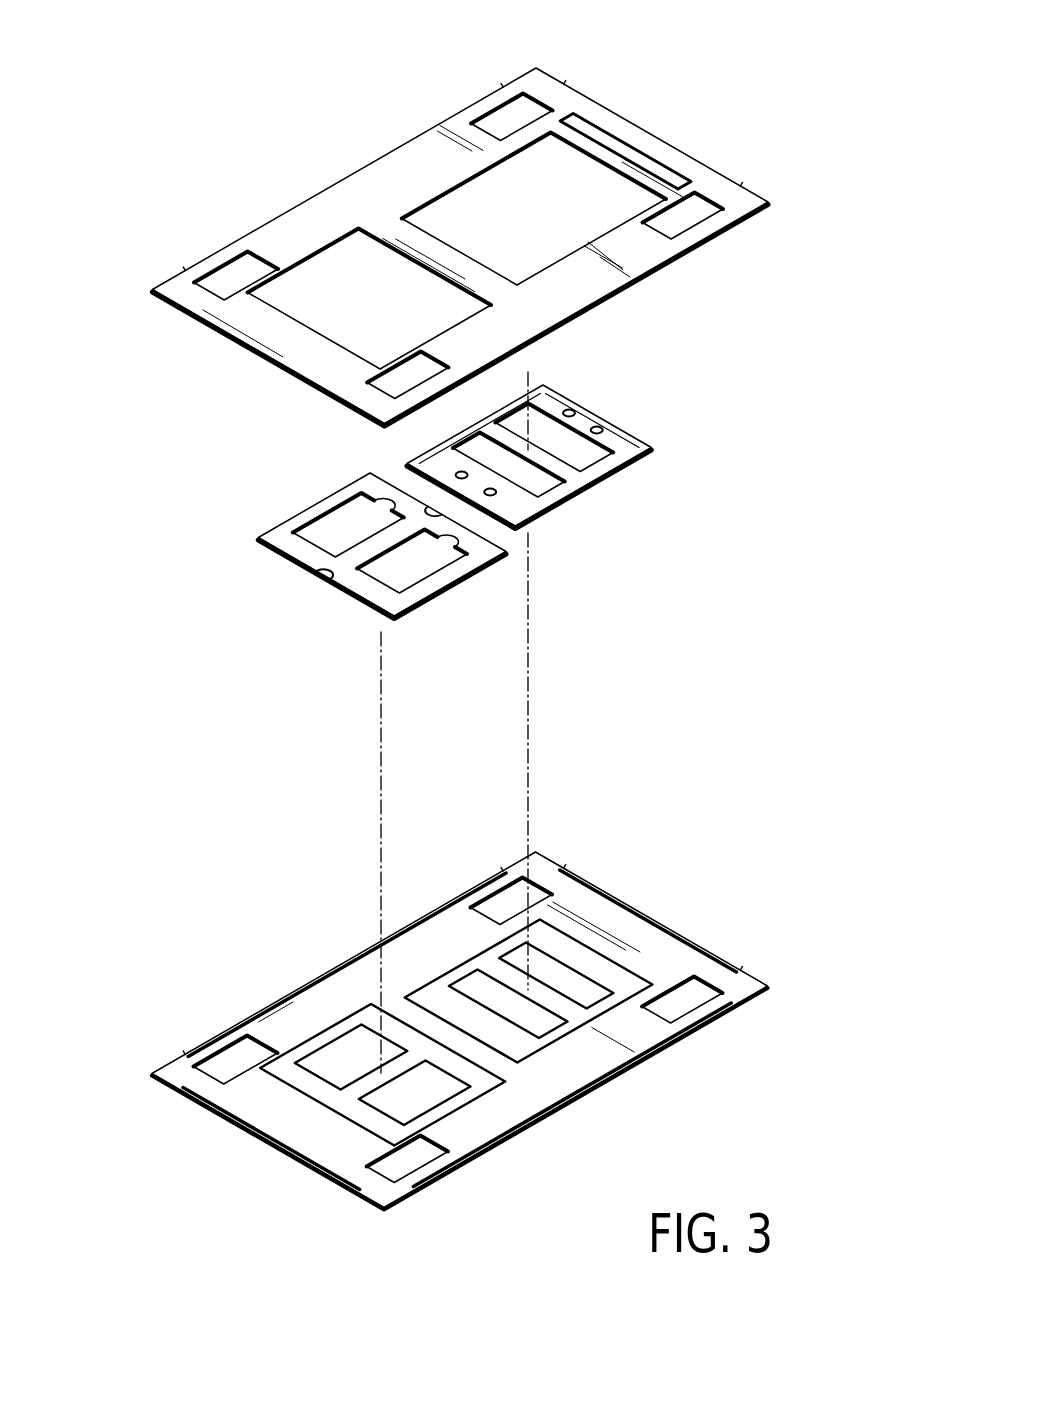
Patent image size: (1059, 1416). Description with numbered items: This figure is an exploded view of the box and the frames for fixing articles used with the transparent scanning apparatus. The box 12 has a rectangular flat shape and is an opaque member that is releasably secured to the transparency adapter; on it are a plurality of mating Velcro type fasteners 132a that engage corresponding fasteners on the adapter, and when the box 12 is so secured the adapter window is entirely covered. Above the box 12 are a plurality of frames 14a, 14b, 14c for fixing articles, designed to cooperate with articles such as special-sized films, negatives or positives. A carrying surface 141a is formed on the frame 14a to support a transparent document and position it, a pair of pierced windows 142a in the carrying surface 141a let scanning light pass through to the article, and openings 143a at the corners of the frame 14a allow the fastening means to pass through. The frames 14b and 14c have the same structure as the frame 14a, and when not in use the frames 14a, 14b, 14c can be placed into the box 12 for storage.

The box 12 is at (460, 1064).
The mating Velcro type fasteners 132a is at (393, 1168).
The frame for fixing article 14a is at (430, 224).
The carrying surface 141a is at (327, 207).
The pierced windows 142a is at (442, 207).
The openings 143a is at (393, 372).
The frame for fixing article 14b is at (622, 390).
The frame for fixing article 14c is at (315, 603).